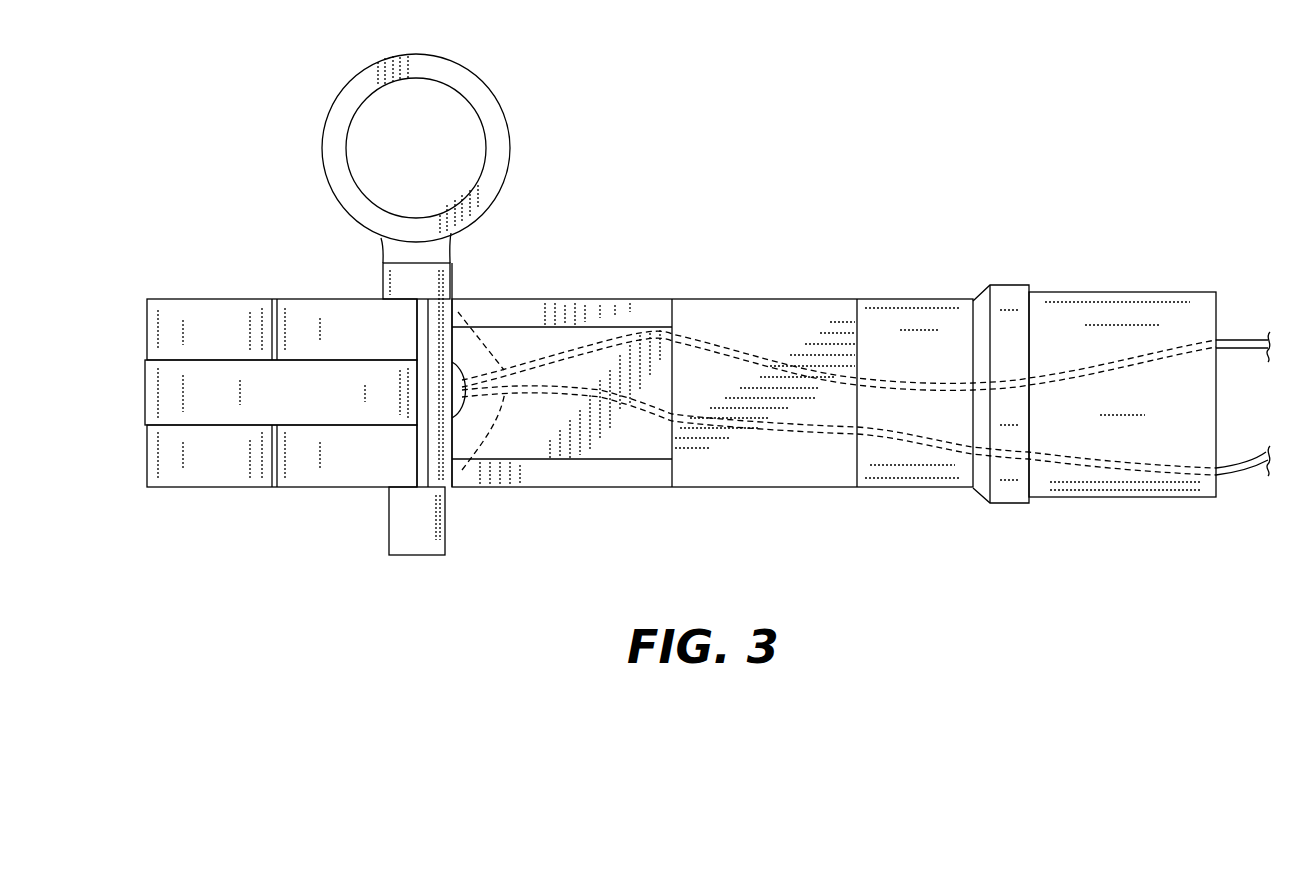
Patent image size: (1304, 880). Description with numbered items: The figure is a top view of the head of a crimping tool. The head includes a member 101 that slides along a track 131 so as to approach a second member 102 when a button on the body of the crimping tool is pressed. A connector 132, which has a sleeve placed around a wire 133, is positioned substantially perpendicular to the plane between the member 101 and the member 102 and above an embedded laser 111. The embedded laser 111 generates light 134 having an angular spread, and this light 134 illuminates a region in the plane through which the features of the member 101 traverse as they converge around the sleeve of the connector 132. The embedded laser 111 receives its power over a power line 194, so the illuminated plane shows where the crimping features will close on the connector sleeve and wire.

The member 101 is at (737, 322).
The member 102 is at (302, 318).
The embedded laser 111 is at (455, 420).
The track 131 is at (545, 340).
The connector 132 is at (397, 286).
The wire 133 is at (406, 504).
The light 134 is at (490, 433).
The power line 194 is at (1240, 340).